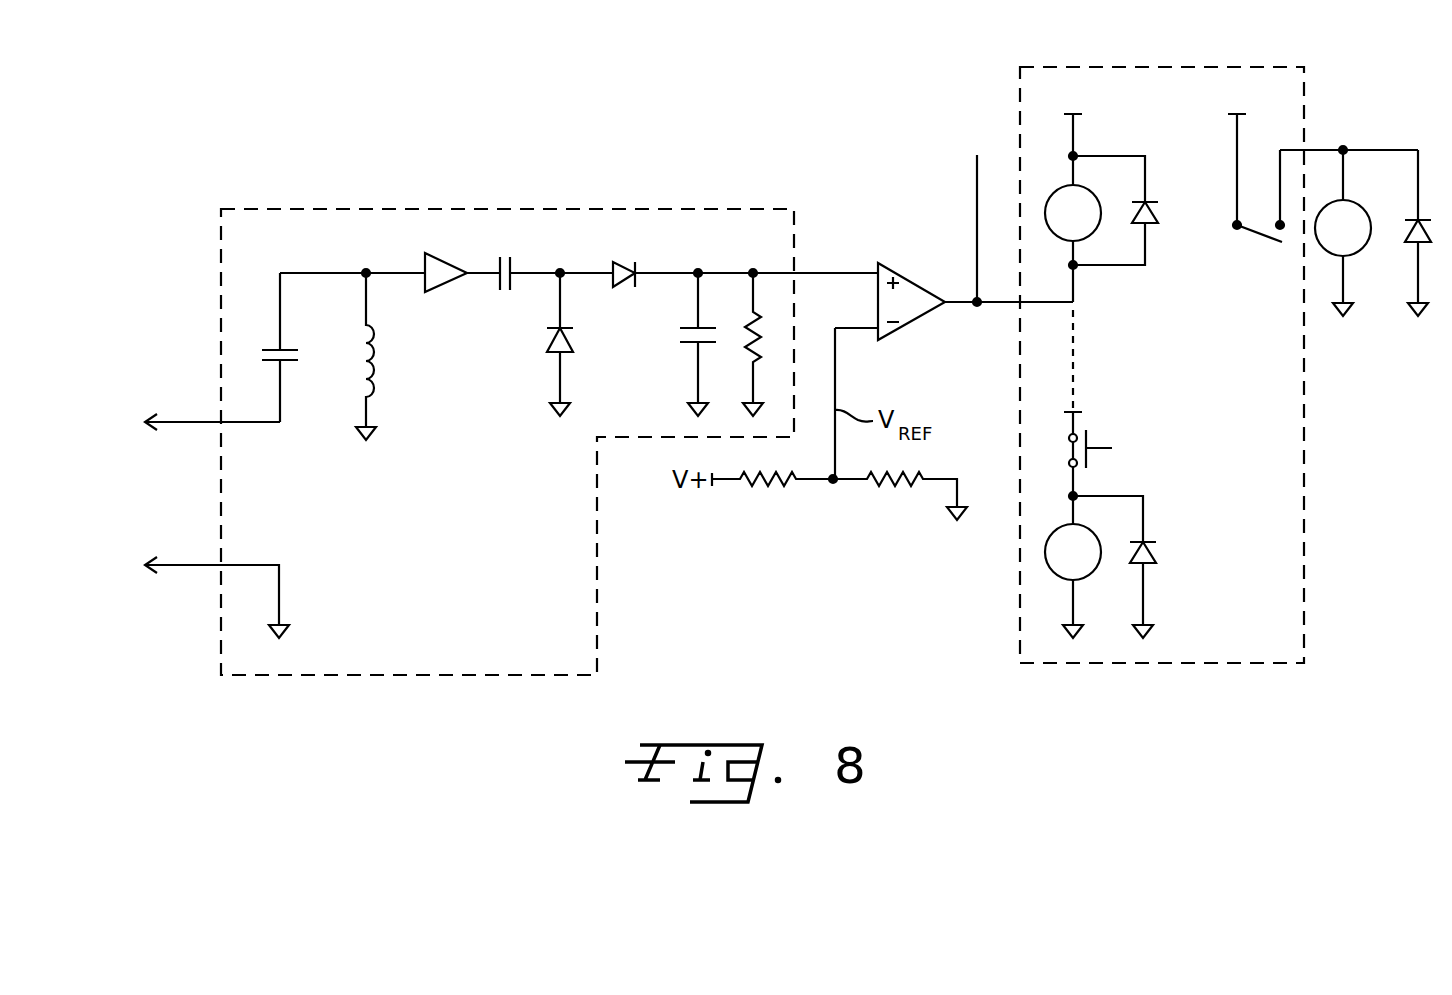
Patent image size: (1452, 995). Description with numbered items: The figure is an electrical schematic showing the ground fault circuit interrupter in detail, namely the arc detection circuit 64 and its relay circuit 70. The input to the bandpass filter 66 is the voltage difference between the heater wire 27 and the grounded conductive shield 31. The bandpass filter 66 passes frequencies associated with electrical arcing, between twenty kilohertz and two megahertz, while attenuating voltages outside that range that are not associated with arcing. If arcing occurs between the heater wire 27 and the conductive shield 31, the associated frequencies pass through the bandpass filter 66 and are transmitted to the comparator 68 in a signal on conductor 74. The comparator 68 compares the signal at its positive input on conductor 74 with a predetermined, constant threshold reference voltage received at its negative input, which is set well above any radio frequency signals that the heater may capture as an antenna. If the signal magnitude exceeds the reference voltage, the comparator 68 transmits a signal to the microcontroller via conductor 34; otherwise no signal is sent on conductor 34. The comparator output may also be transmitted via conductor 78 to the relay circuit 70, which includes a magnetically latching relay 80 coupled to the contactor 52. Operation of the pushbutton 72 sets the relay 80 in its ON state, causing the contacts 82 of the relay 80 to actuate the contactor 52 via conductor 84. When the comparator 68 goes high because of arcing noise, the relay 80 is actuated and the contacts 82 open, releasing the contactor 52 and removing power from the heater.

The heater wire 27 is at (190, 421).
The grounded conductive shield 31 is at (185, 565).
The conductor 34 is at (977, 175).
The contactor 52 is at (1360, 254).
The arc detection circuit 64 is at (829, 158).
The bandpass filter 66 is at (221, 212).
The comparator 68 is at (912, 286).
The relay circuit 70 is at (1020, 75).
The reset button 72 is at (1100, 450).
The conductor 74 is at (835, 273).
The conductor 78 is at (1000, 303).
The magnetically latching relay 80 is at (1188, 436).
The contacts 82 is at (1250, 242).
The conductor 84 is at (1323, 150).